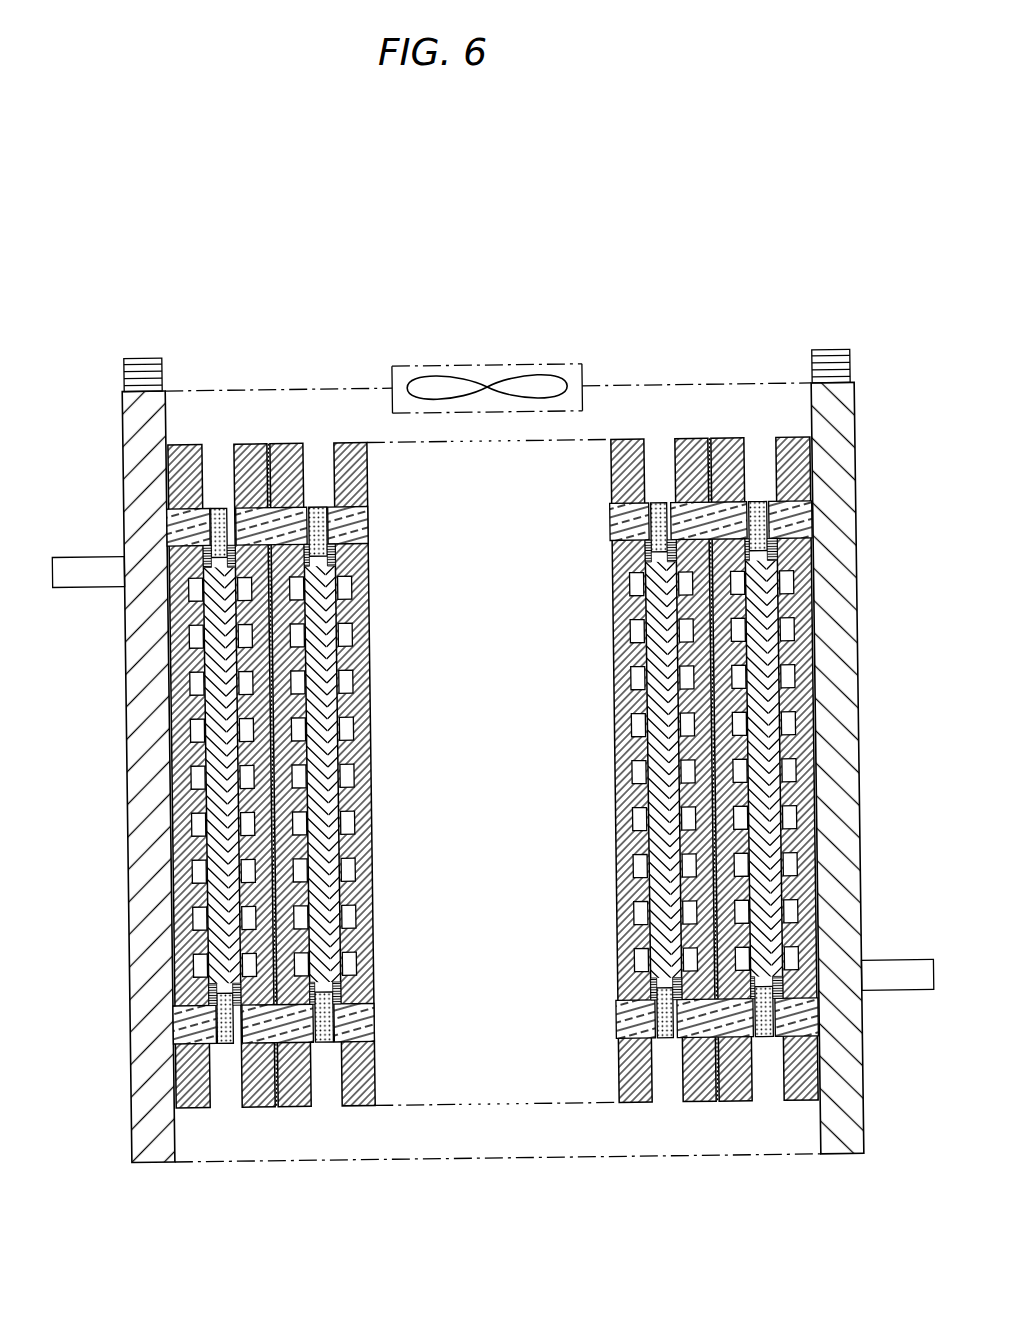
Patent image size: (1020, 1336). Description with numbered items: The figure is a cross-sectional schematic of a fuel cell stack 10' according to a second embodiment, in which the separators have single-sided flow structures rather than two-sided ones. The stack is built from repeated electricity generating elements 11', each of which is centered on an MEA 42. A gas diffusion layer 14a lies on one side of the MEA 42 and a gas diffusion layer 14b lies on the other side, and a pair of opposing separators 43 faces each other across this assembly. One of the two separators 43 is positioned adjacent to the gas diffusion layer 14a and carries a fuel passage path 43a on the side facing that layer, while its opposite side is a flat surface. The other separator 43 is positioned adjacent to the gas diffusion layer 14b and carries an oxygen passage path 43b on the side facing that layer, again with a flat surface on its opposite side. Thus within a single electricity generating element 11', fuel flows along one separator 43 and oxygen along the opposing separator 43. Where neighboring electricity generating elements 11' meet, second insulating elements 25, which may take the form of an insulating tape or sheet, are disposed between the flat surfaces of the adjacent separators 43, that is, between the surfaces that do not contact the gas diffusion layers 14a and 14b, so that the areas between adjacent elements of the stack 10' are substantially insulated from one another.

The fuel cell stack 10' is at (493, 756).
The electricity generating element 11' is at (317, 851).
The second insulating element 25 is at (305, 641).
The gas diffusion layer 14a is at (312, 701).
The gas diffusion layer 14b is at (339, 673).
The fuel passage path 43a is at (312, 820).
The oxygen passage path 43b is at (358, 773).
The separator 43 is at (287, 1112).
The MEA 42 is at (320, 986).